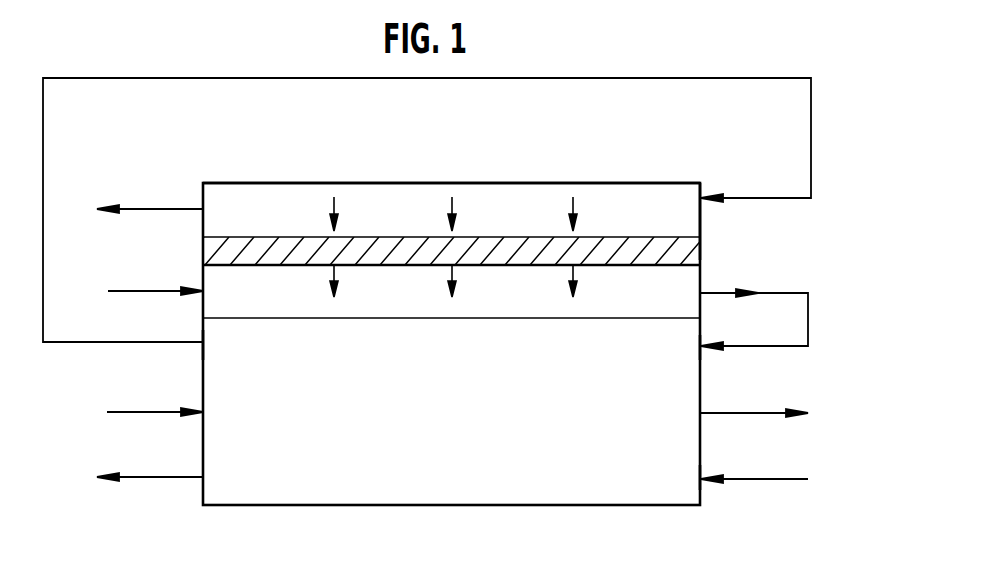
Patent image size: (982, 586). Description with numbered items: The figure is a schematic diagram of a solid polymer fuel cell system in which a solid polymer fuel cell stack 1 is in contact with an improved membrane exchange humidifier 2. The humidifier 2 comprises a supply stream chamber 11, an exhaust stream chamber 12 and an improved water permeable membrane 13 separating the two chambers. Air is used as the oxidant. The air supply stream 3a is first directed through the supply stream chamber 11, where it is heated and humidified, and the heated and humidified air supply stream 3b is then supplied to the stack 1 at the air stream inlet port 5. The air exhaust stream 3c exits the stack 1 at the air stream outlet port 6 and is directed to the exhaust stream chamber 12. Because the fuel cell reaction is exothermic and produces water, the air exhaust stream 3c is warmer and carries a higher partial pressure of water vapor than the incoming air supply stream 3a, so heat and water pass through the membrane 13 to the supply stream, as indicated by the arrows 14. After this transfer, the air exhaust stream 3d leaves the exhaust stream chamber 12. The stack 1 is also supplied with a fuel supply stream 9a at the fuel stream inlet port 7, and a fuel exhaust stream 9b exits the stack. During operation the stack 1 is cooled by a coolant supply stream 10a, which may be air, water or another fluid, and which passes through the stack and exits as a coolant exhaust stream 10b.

The solid polymer fuel cell stack 1 is at (431, 480).
The membrane exchange humidifier 2 is at (605, 163).
The air supply stream 3a is at (163, 291).
The heated and humidified air supply stream 3b is at (775, 293).
The air exhaust stream 3c is at (43, 191).
The air exhaust stream 3d is at (172, 209).
The air stream inlet port 5 is at (693, 350).
The air stream outlet port 6 is at (205, 345).
The fuel stream inlet port 7 is at (698, 478).
The fuel supply stream 9a is at (748, 479).
The fuel exhaust stream 9b is at (163, 477).
The coolant supply stream 10a is at (160, 412).
The coolant exhaust stream 10b is at (742, 413).
The supply stream chamber 11 is at (663, 296).
The exhaust stream chamber 12 is at (640, 196).
The water permeable membrane 13 is at (688, 253).
The arrows 14 is at (572, 200).